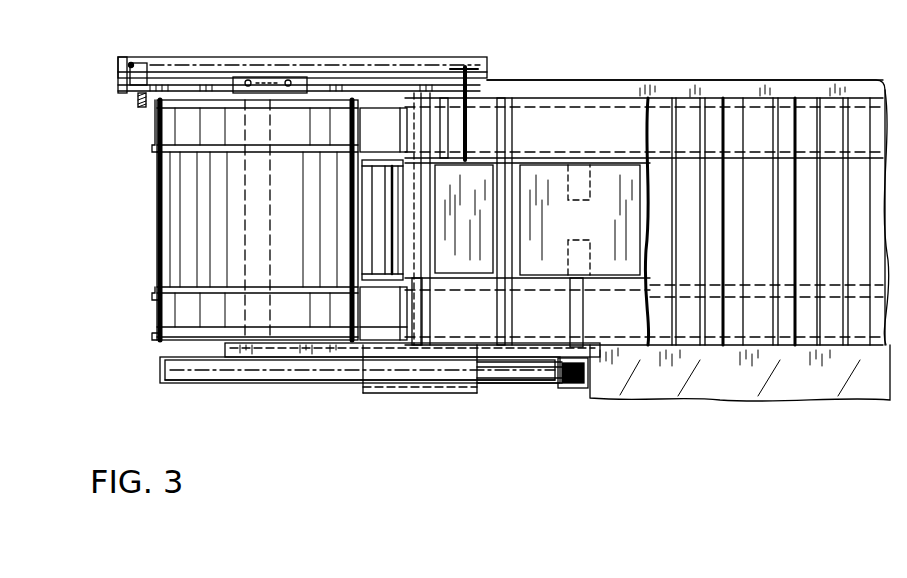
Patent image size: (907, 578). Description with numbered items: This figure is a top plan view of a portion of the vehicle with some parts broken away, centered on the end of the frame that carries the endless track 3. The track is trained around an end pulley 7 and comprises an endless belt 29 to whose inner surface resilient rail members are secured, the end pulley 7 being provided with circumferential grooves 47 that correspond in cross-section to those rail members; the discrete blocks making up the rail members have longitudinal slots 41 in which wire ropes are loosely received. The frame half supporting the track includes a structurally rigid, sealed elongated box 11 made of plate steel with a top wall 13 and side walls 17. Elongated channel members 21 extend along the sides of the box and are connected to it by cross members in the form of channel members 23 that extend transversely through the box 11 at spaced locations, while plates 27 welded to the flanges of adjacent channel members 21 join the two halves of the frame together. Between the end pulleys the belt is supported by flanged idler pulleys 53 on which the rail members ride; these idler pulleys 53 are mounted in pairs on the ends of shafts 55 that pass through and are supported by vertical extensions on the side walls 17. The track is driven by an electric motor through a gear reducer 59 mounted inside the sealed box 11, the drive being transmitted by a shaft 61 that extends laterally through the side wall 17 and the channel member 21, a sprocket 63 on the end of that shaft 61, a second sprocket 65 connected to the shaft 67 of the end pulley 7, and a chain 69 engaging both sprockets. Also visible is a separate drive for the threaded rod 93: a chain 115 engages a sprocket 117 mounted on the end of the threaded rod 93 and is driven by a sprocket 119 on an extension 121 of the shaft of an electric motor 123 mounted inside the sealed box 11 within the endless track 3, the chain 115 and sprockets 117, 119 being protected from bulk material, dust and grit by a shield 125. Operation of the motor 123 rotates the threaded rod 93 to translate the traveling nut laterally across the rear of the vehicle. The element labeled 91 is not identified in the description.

The endless track 3 is at (692, 103).
The end pulley 7 is at (153, 258).
The sealed elongated box 11 is at (488, 157).
The top wall 13 is at (393, 220).
The side wall 17 is at (443, 157).
The elongated channel member 21 is at (510, 363).
The channel member 23 is at (420, 100).
The plate 27 is at (388, 388).
The endless belt 29 is at (632, 105).
The longitudinal slot 41 is at (162, 368).
The circumferential groove 47 is at (160, 125).
The flanged idler pulley 53 is at (383, 117).
The shaft 55 is at (373, 193).
The gear reducer 59 is at (597, 231).
The shaft 61 is at (585, 313).
The sprocket 63 is at (568, 387).
The second sprocket 65 is at (177, 380).
The shaft 67 is at (255, 222).
The chain 69 is at (417, 373).
The bracket 91 is at (127, 93).
The threaded rod 93 is at (135, 107).
The chain 115 is at (247, 65).
The sprocket 117 is at (135, 57).
The sprocket 119 is at (465, 67).
The extension 121 is at (463, 97).
The electric motor 123 is at (488, 244).
The shield 125 is at (173, 55).